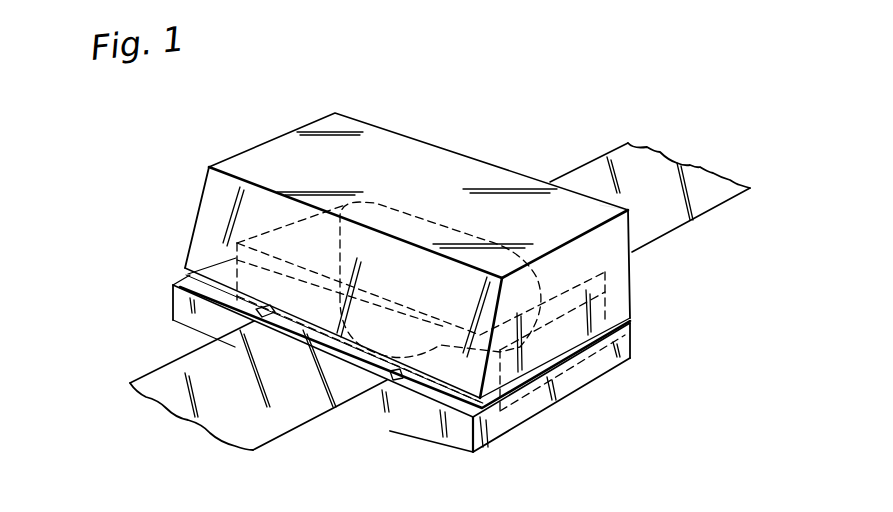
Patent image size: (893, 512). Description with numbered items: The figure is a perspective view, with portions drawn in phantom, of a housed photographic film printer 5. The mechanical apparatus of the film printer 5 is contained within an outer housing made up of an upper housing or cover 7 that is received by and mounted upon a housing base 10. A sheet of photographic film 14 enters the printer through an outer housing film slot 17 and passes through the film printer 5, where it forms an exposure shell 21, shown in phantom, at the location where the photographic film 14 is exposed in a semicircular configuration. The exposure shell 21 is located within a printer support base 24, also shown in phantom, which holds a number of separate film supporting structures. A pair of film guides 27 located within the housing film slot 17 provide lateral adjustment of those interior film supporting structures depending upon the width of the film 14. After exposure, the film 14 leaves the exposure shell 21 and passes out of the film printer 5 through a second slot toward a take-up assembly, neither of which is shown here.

The photographic film printer 5 is at (495, 124).
The upper housing or cover 7 is at (223, 193).
The housing base 10 is at (533, 404).
The photographic film 14 is at (172, 375).
The outer housing film slot 17 is at (392, 390).
The exposure shell 21 is at (401, 205).
The printer support base 24 is at (235, 260).
The film guides 27 is at (272, 310).